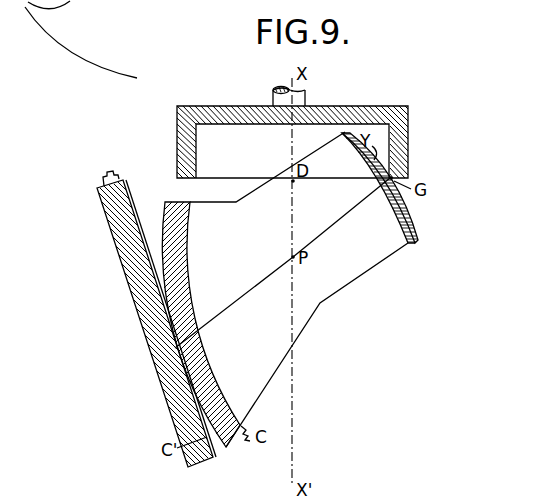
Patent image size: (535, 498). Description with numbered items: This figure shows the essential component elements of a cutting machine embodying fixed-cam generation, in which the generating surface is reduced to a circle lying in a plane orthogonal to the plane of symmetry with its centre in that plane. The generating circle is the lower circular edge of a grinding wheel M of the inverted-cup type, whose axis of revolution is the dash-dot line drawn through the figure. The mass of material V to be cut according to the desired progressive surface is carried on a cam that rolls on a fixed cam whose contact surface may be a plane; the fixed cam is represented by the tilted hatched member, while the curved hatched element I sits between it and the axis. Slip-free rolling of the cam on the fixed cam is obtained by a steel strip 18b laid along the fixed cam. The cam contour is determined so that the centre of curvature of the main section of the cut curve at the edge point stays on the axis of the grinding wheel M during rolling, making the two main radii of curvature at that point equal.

The steel strip 18b is at (124, 210).
The grinding wheel M is at (403, 134).
The mass of material V is at (417, 238).
The lens I is at (192, 319).